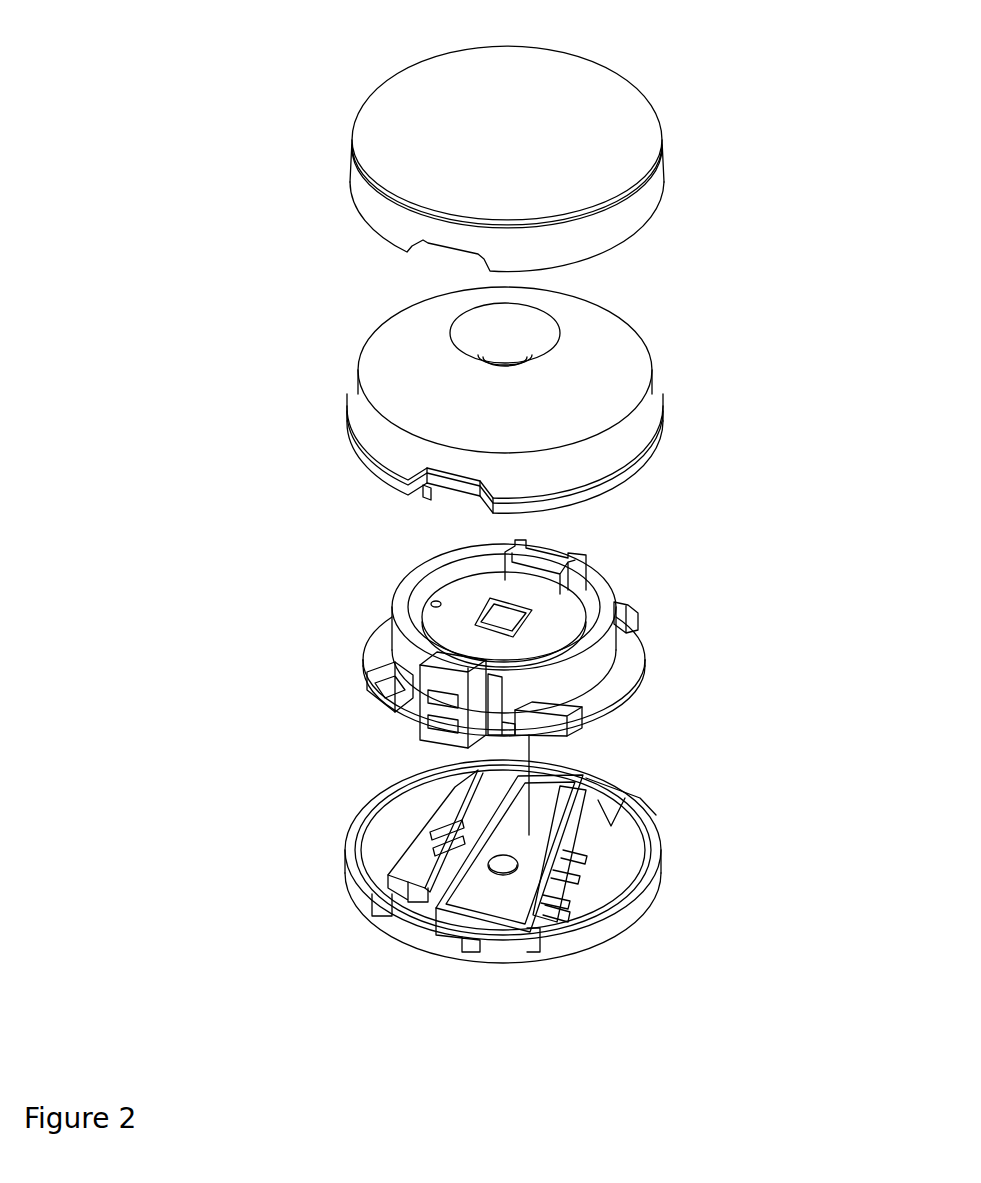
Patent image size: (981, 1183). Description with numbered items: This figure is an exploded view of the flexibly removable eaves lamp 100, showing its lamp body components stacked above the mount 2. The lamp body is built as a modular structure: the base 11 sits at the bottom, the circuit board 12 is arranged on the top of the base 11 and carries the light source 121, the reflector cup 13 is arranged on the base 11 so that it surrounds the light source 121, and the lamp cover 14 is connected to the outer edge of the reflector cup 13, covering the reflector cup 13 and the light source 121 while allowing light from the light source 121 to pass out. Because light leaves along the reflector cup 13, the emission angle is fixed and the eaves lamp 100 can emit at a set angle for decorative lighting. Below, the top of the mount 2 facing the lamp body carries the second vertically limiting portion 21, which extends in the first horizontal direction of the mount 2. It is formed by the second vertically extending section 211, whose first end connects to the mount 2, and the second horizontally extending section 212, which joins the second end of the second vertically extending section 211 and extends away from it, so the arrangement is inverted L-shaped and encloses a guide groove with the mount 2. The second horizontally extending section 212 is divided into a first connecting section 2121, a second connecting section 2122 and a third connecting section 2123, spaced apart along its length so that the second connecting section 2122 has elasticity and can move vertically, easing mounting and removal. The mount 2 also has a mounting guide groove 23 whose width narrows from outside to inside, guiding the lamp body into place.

The eaves lamp 100 is at (308, 123).
The lamp cover 14 is at (590, 103).
The reflector cup 13 is at (632, 363).
The base 11 is at (377, 647).
The circuit board 12 is at (551, 612).
The light source 121 is at (507, 615).
The mount 2 is at (432, 946).
The second vertically limiting portion 21 is at (858, 903).
The second vertically extending section 211 is at (561, 897).
The second horizontally extending section 212 is at (773, 840).
The first connecting section 2121 is at (554, 880).
The second connecting section 2122 is at (571, 857).
The third connecting section 2123 is at (588, 830).
The mounting guide groove 23 is at (594, 802).